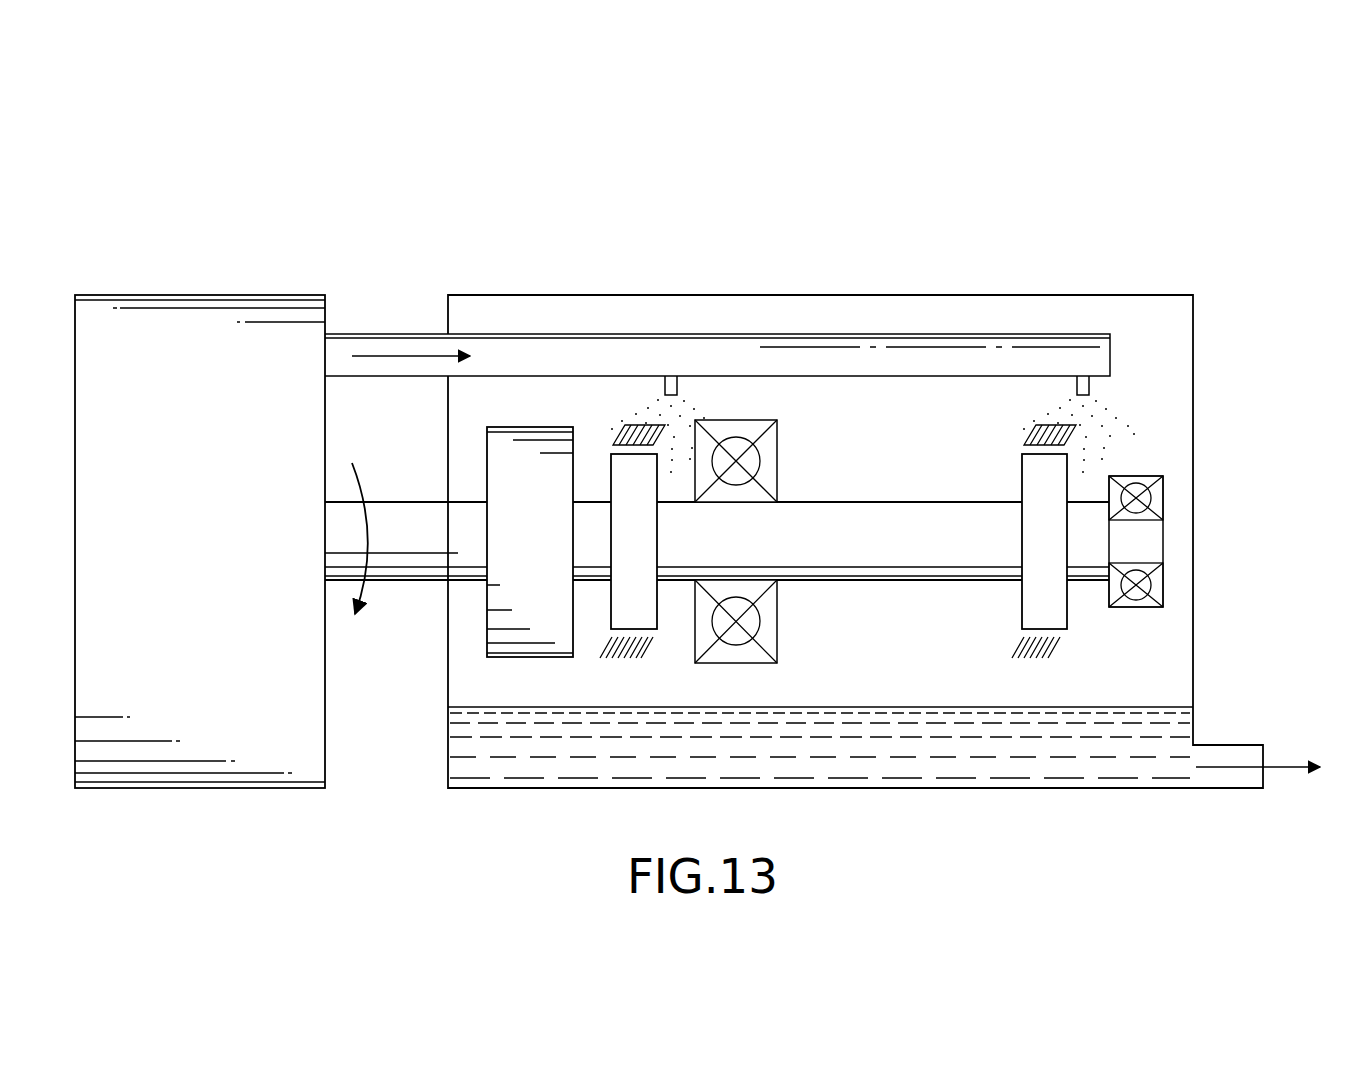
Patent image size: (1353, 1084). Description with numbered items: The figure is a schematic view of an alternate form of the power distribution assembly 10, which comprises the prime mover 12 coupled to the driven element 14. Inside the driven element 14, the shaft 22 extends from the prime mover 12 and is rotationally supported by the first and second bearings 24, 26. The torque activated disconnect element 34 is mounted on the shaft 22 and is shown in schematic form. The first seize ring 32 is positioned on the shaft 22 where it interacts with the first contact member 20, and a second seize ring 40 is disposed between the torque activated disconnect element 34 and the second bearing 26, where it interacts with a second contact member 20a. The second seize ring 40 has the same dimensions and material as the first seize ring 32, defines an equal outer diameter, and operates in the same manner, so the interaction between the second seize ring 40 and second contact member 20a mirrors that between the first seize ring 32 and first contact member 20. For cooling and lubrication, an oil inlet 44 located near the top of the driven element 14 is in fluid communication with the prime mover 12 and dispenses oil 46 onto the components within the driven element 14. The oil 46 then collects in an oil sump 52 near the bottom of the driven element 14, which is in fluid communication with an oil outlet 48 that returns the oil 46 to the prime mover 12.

The power distribution assembly 10 is at (290, 193).
The prime mover 12 is at (148, 330).
The driven element 14 is at (1193, 250).
The first contact member 20 is at (1034, 428).
The second contact member 20a is at (626, 428).
The shaft 22 is at (423, 560).
The first bearing 24 is at (1147, 481).
The second bearing 26 is at (762, 452).
The first seize ring 32 is at (1034, 480).
The torque activated disconnect element 34 is at (503, 635).
The second seize ring 40 is at (628, 607).
The oil inlet 44 is at (448, 340).
The oil 46 is at (645, 398).
The oil outlet 48 is at (1213, 758).
The oil sump 52 is at (1017, 746).